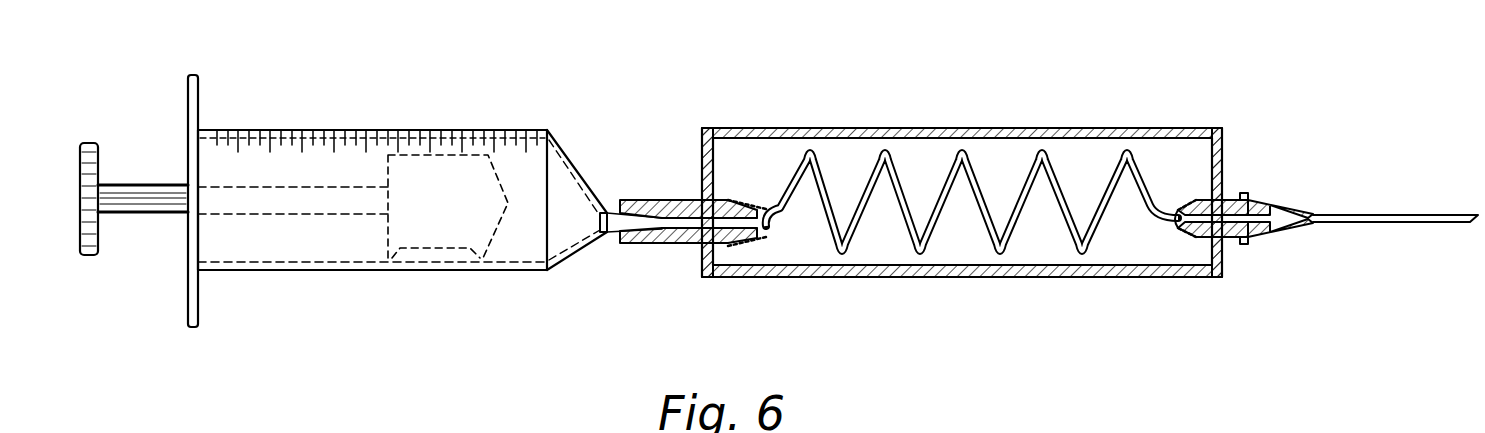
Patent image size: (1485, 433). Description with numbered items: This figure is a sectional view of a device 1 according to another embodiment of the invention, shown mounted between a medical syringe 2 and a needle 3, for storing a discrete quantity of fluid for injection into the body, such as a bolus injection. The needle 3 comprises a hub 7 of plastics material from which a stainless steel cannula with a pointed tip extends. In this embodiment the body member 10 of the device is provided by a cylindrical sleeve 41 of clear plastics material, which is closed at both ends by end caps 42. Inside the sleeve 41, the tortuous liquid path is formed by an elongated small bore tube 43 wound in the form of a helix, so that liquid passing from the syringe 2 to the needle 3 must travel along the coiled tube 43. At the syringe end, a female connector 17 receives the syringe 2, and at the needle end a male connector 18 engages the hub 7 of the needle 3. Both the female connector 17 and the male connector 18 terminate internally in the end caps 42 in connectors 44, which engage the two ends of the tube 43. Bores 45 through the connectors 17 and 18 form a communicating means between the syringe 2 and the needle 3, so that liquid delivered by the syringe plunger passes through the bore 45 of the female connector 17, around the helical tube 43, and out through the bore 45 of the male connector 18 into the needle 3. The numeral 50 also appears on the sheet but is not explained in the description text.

The device 1 is at (812, 90).
The medical syringe 2 is at (327, 160).
The needle 3 is at (1403, 217).
The hub 7 is at (1277, 202).
The body member 10 is at (933, 157).
The female connector 17 is at (672, 238).
The male connector 18 is at (1233, 197).
The cylindrical sleeve 41 is at (866, 133).
The end caps 42 is at (702, 167).
The small bore tube 43 is at (980, 230).
The connectors 44 is at (720, 247).
The bores 45 is at (688, 230).
The flow restrictor 50 is at (1122, 412).